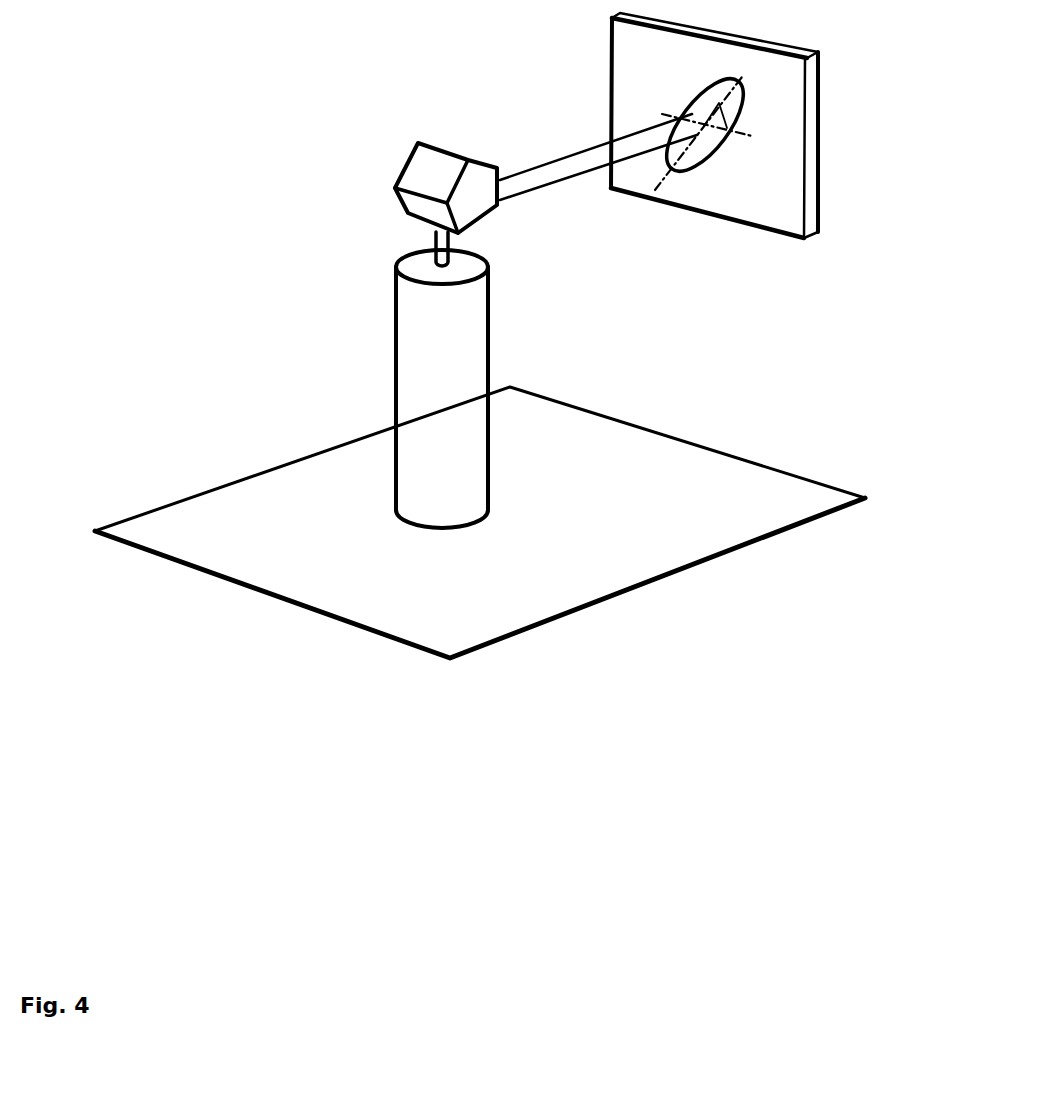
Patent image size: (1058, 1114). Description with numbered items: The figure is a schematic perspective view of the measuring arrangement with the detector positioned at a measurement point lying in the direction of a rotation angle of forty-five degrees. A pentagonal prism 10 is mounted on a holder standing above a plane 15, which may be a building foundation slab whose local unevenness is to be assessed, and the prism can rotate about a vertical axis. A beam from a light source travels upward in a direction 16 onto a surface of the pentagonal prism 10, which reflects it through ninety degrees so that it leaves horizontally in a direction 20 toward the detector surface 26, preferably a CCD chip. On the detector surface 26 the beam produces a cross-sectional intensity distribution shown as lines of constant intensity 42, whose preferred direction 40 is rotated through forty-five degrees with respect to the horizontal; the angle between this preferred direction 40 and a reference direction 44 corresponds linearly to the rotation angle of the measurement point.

The pentagonal prism 10 is at (478, 207).
The plane 15 is at (568, 448).
The direction of the incident beam 16 is at (450, 252).
The direction of the reflected beam 20 is at (570, 178).
The detector surface 26 is at (732, 200).
The preferred direction of the cross-sectional intensity distribution 40 is at (742, 82).
The lines of constant intensity 42 is at (743, 110).
The reference direction 44 is at (745, 135).